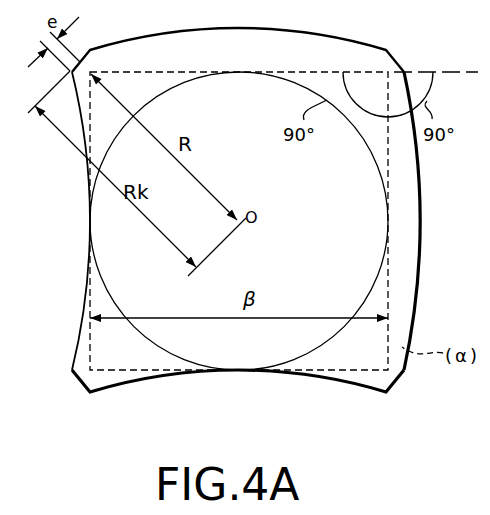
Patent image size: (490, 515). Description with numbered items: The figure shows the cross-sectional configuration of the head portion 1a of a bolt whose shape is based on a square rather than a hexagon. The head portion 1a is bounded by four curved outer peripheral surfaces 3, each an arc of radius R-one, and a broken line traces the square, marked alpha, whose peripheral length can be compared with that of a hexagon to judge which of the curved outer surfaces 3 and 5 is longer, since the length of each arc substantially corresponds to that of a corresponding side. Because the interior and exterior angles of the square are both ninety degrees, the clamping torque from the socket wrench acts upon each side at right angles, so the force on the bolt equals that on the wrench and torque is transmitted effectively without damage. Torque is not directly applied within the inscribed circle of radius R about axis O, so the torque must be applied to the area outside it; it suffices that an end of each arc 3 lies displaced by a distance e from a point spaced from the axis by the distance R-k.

The curved outer peripheral surface 3 is at (117, 53).
The head portion 1a is at (402, 221).
The curved outer surface 5 is at (288, 221).